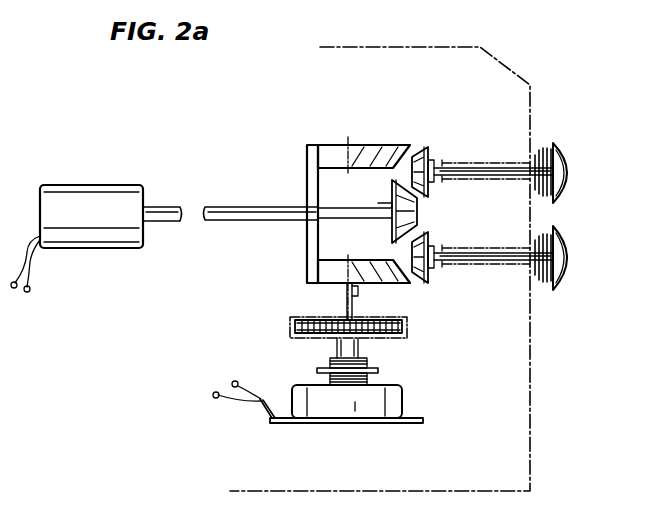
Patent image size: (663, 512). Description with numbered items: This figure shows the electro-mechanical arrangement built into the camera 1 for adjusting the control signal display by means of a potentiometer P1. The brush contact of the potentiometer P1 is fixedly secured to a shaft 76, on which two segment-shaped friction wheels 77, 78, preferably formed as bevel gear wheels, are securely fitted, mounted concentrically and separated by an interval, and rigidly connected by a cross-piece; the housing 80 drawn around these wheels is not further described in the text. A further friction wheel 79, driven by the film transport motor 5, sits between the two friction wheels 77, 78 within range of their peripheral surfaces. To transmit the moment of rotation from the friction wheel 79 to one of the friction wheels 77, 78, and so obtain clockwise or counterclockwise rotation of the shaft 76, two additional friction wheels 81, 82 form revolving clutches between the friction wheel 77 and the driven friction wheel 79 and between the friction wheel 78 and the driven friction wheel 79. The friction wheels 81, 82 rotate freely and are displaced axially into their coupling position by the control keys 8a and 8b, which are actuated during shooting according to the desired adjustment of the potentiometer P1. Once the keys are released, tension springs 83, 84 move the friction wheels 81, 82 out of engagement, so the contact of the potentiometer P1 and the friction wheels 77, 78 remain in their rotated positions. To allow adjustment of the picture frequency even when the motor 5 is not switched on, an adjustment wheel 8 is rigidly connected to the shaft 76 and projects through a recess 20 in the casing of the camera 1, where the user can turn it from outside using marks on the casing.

The camera 1 is at (537, 453).
The film transport motor 5 is at (70, 200).
The adjustment wheel 8 is at (308, 324).
The control key 8a is at (562, 168).
The control key 8b is at (562, 247).
The recess 20 is at (290, 338).
The shaft 76 is at (346, 304).
The friction wheel 77 is at (362, 152).
The friction wheel 78 is at (388, 276).
The friction wheel 79 is at (412, 207).
The gear housing 80 is at (308, 190).
The friction wheel 81 is at (428, 157).
The friction wheel 82 is at (428, 270).
The tension spring 83 is at (540, 150).
The tension spring 84 is at (540, 283).
The potentiometer P1 is at (385, 403).